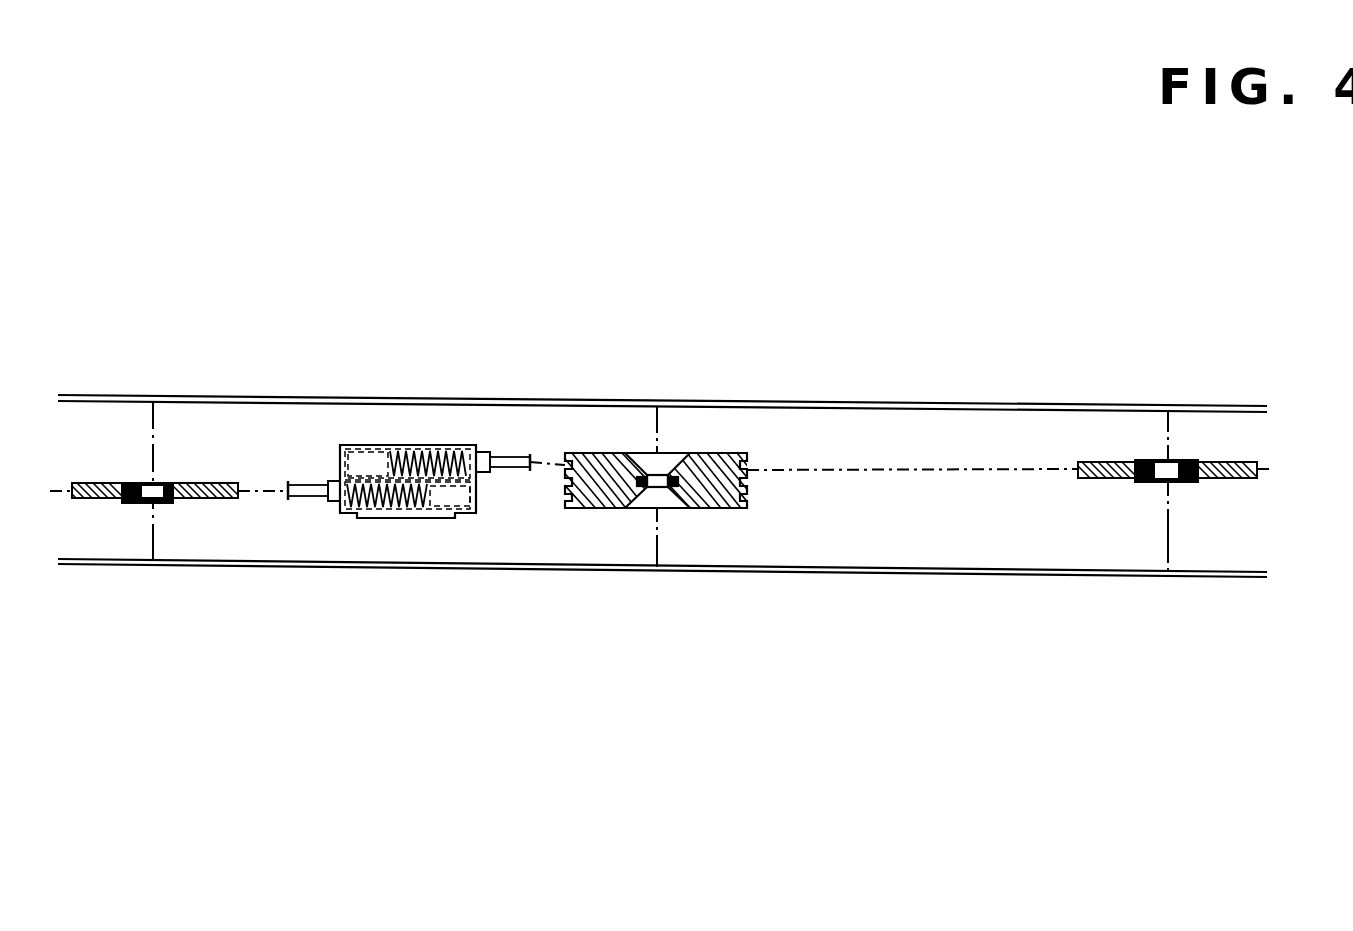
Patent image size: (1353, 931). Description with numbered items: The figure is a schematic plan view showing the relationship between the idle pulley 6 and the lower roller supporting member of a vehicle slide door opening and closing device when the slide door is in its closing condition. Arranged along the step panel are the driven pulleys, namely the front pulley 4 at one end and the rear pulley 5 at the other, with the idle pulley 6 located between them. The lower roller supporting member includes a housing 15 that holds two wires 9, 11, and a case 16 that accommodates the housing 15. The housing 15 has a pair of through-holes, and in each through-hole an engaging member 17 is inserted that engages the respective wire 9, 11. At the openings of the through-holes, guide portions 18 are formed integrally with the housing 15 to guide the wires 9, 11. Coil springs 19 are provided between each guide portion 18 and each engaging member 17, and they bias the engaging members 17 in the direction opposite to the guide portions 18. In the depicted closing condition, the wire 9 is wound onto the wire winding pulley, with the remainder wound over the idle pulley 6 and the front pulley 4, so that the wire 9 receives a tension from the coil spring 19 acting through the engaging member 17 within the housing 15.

The front pulley 4 is at (205, 483).
The rear pulley 5 is at (1122, 460).
The idle pulley 6 is at (713, 453).
The wire 9 is at (305, 485).
The wire 11 is at (522, 458).
The housing 15 is at (407, 518).
The case 16 is at (408, 557).
The engaging member 17 is at (371, 465).
The guide portion 18 is at (483, 452).
The coil spring 19 is at (428, 452).